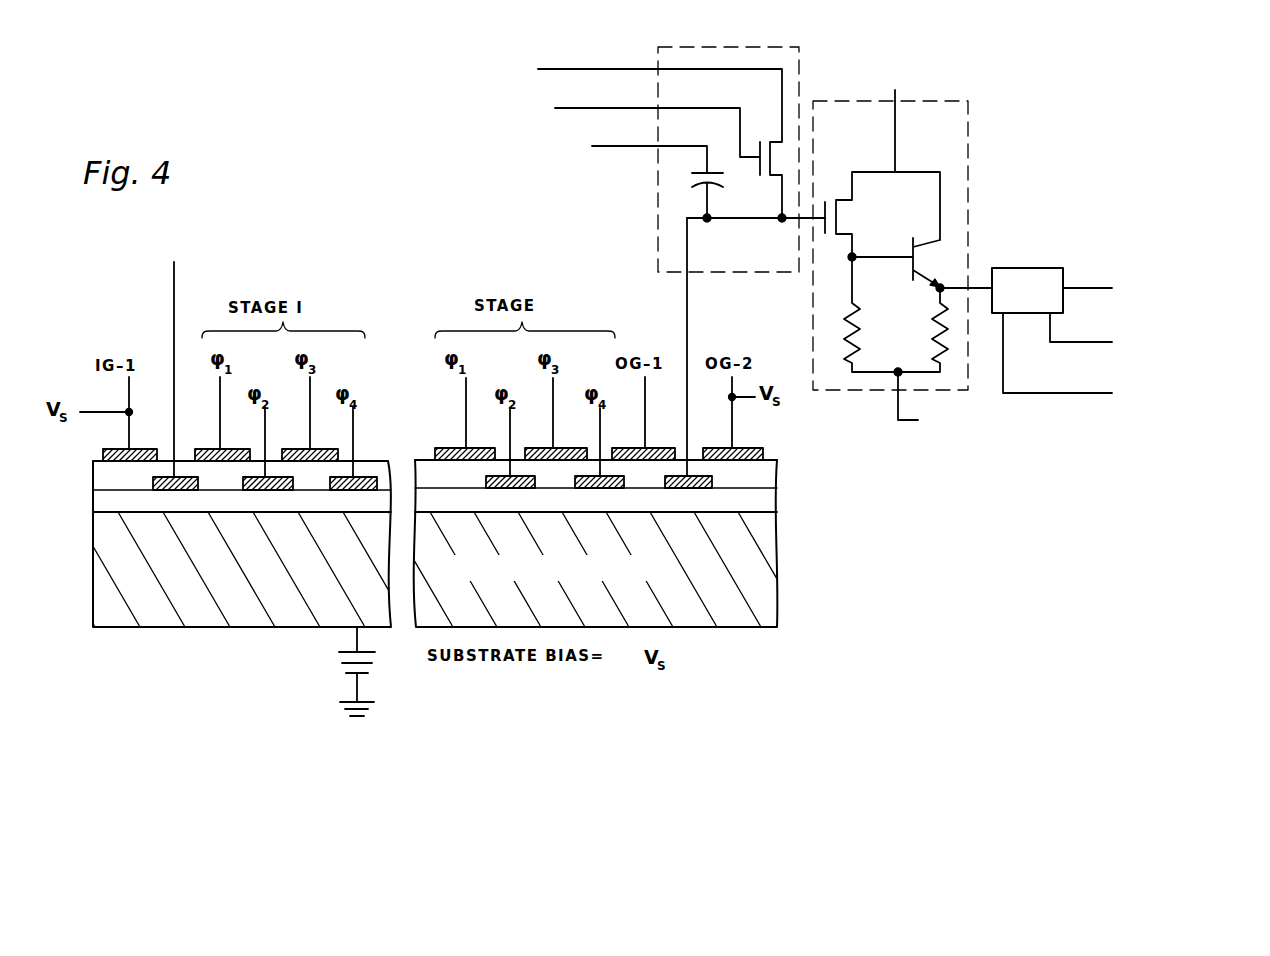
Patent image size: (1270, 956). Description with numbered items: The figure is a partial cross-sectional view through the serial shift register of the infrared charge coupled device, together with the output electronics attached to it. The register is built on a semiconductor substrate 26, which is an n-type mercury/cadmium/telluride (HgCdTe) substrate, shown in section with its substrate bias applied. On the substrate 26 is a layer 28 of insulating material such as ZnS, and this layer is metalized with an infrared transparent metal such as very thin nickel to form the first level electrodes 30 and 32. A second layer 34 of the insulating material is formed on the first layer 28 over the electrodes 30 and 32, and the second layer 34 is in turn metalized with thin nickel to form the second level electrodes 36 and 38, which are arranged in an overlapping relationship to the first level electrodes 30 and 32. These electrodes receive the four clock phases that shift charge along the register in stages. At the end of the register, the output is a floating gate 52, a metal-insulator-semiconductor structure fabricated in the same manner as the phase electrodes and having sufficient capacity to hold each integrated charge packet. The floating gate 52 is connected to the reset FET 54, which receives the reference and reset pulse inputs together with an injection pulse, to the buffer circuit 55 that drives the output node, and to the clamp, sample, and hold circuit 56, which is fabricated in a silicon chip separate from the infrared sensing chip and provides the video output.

The semiconductor substrate 26 is at (105, 563).
The layer of insulating material 28 is at (105, 501).
The first level electrode 30 is at (268, 476).
The first level electrode 32 is at (366, 461).
The second layer of insulating material 34 is at (100, 479).
The second level electrode 36 is at (206, 449).
The second level electrode 38 is at (322, 449).
The floating gate 52 is at (693, 476).
The reset FET 54 is at (750, 47).
The buffer circuit 55 is at (932, 101).
The clamp, sample, and hold circuit 56 is at (1013, 268).